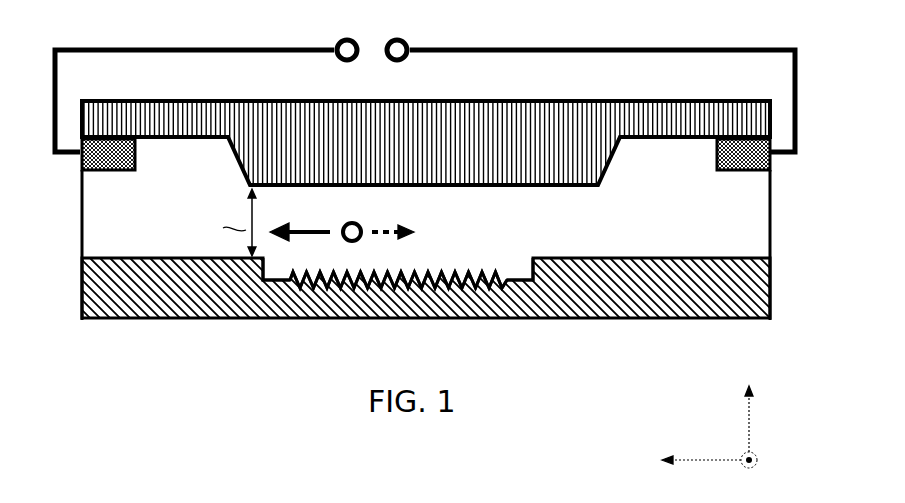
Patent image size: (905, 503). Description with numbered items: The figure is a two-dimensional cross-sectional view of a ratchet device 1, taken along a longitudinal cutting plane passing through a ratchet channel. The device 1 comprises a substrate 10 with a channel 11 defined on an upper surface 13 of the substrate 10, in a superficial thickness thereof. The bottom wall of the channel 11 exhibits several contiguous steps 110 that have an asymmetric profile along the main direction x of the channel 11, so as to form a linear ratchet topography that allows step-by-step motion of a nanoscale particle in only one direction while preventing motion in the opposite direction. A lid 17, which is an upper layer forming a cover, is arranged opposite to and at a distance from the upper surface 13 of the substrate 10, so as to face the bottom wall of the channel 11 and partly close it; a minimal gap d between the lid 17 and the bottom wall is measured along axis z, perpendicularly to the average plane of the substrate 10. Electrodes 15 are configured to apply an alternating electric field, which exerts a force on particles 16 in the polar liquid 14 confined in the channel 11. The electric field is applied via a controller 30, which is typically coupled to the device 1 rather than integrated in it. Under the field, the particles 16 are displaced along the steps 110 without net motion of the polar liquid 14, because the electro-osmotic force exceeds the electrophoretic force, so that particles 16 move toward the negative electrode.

The ratchet device 1 is at (427, 244).
The substrate 10 is at (80, 306).
The channel 11 is at (509, 262).
The steps 110 is at (438, 272).
The upper surface 13 is at (113, 256).
The polar liquid 14 is at (748, 220).
The electrodes 15 is at (136, 154).
The particles 16 is at (362, 222).
The lid 17 is at (507, 104).
The controller 30 is at (401, 38).